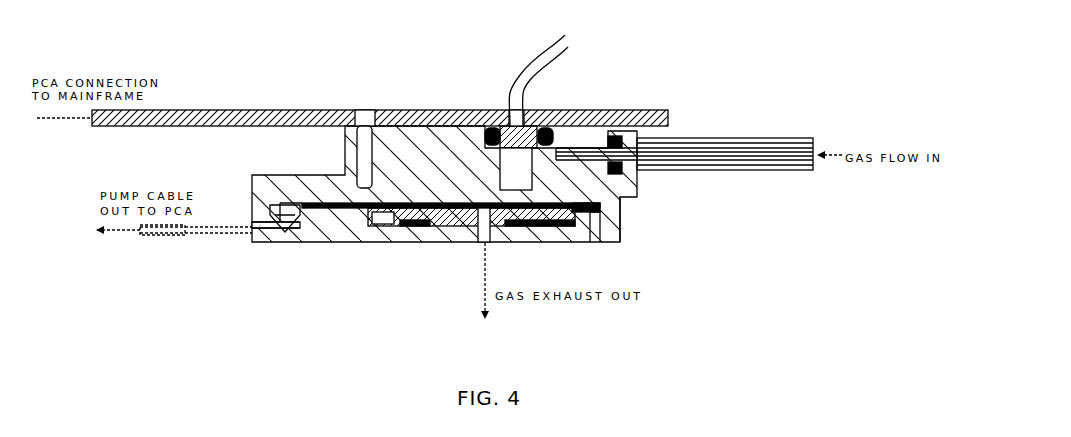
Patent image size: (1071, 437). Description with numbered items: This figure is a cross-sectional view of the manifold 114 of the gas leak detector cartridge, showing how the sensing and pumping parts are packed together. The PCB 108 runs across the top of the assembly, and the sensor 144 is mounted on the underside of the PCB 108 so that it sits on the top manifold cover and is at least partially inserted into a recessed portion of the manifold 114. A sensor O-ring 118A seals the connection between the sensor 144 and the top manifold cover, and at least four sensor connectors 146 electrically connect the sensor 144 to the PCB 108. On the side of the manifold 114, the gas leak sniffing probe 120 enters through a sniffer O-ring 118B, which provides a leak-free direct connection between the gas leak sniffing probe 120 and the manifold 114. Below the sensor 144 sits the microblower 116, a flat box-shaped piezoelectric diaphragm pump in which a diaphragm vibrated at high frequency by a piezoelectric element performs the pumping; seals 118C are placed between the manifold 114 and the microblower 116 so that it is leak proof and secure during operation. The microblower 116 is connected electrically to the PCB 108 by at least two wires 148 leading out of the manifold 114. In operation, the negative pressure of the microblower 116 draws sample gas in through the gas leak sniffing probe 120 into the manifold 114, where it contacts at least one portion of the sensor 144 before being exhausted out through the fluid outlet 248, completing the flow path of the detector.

The PCB 108 is at (401, 109).
The manifold 114 is at (672, 223).
The microblower 116 is at (440, 242).
The sensor O-ring 118A is at (549, 127).
The sniffer O-ring 118B is at (616, 134).
The seals 118C is at (350, 243).
The gas leak sniffing probe 120 is at (727, 138).
The sensor 144 is at (503, 112).
The sensor connectors 146 is at (544, 69).
The wires 148 is at (183, 236).
The fluid outlet 248 is at (486, 246).